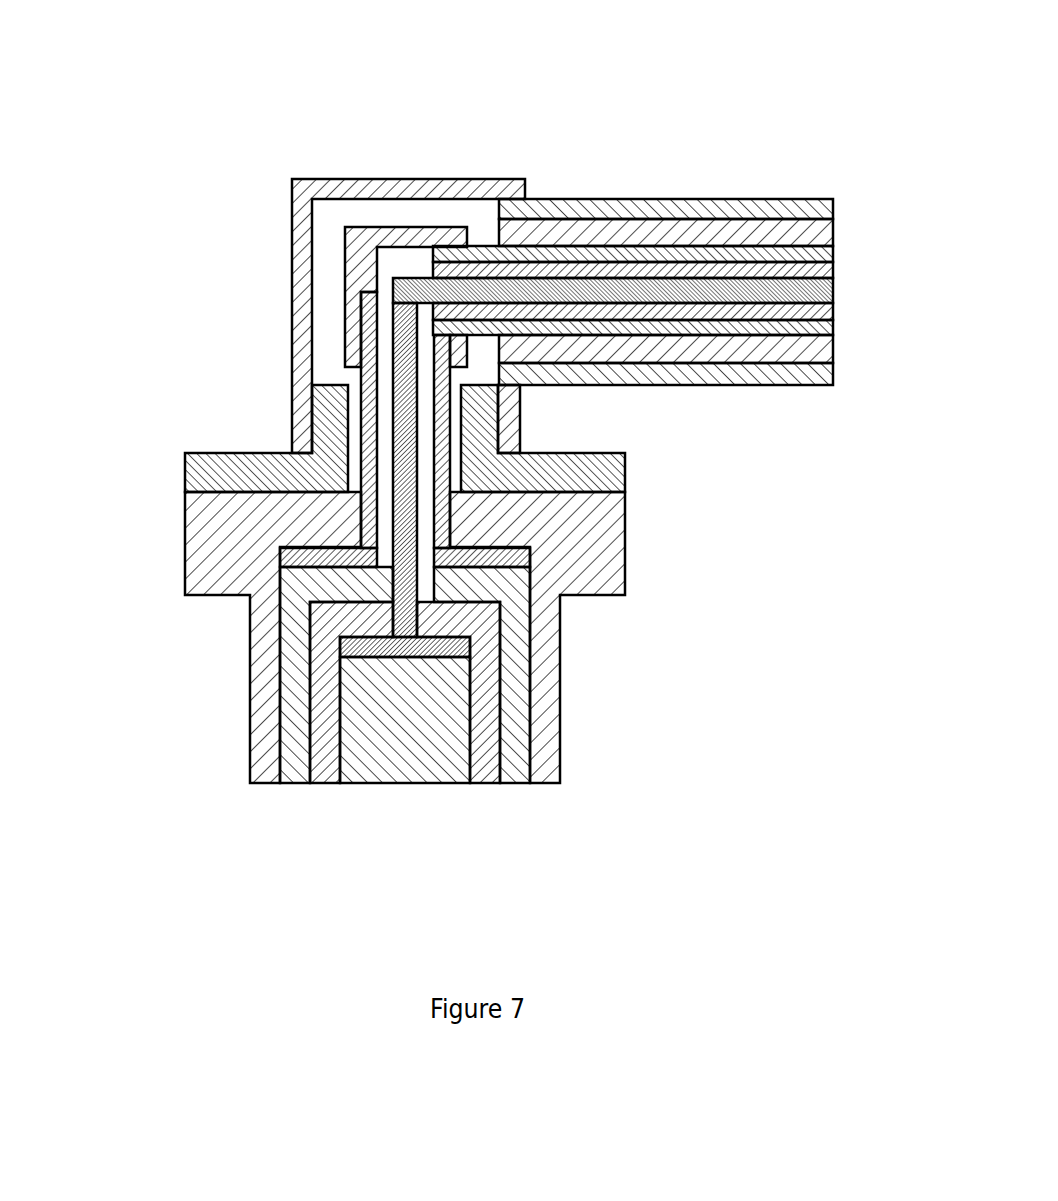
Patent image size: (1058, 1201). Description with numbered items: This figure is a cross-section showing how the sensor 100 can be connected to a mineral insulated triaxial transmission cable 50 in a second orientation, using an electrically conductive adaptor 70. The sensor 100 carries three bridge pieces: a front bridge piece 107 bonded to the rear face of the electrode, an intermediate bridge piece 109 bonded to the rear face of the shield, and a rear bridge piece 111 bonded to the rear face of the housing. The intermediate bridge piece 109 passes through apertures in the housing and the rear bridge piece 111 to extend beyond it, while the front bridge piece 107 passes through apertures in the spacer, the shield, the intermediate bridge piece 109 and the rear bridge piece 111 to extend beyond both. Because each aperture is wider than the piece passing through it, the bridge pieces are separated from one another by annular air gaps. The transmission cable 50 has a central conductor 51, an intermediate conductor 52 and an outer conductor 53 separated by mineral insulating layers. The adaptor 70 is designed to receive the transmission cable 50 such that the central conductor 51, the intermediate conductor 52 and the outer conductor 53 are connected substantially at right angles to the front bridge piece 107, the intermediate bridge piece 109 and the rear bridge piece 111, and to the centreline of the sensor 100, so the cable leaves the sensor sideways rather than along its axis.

The triaxial transmission cable 50 is at (655, 238).
The central conductor 51 is at (735, 290).
The intermediate conductor 52 is at (617, 247).
The outer conductor 53 is at (827, 385).
The electrically conductive adaptor 70 is at (398, 178).
The sensor 100 is at (165, 437).
The front bridge piece 107 is at (400, 578).
The intermediate bridge piece 109 is at (505, 553).
The rear bridge piece 111 is at (590, 470).